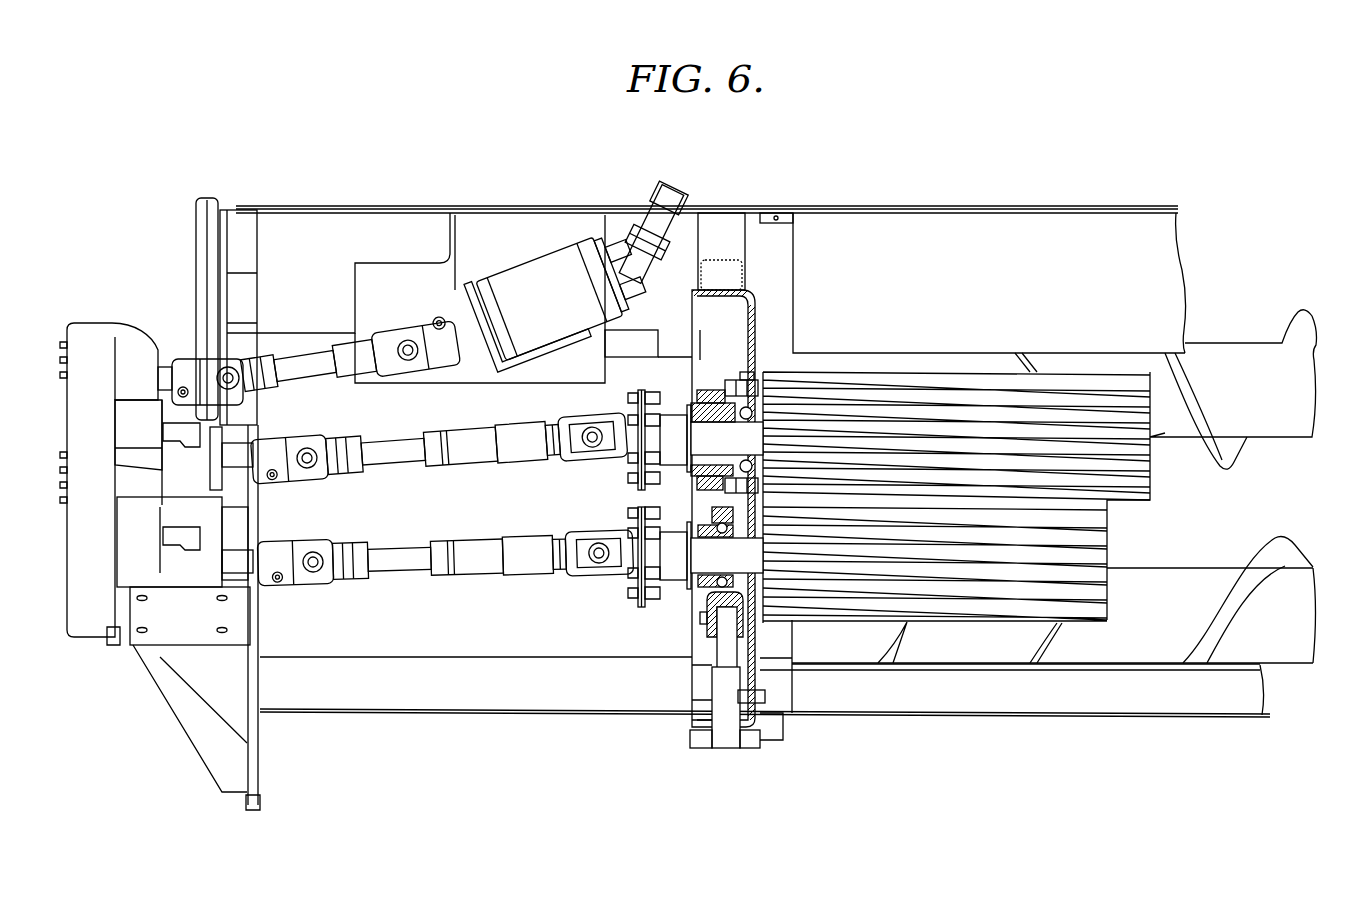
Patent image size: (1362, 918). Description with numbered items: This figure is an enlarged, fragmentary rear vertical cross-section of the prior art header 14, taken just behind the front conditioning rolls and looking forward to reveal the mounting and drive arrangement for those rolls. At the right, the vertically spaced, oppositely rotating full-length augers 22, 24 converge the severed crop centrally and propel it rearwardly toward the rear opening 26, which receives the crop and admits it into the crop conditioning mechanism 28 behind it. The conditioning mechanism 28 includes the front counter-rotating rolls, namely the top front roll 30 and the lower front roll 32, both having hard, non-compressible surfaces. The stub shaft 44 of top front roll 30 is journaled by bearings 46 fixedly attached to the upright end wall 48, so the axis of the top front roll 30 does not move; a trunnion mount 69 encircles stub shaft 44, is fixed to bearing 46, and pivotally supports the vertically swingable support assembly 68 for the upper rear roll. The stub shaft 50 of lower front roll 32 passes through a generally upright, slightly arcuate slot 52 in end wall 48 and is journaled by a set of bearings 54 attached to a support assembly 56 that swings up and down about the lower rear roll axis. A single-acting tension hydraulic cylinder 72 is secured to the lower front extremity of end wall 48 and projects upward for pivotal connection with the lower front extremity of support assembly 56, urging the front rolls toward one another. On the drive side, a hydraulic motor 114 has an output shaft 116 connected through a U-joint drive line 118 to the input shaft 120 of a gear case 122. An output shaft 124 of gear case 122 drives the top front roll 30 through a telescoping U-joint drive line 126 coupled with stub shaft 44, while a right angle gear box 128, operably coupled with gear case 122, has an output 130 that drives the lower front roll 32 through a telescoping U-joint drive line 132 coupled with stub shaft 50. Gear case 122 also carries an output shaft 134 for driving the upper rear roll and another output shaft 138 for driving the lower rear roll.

The header 14 is at (868, 180).
The auger 22 is at (1292, 324).
The auger 24 is at (1292, 553).
The rear opening 26 is at (1152, 355).
The crop conditioning mechanism 28 is at (953, 352).
The top front conditioning roll 30 is at (1162, 481).
The lower front conditioning roll 32 is at (1113, 596).
The stub shaft 44 is at (680, 425).
The bearings 46 is at (740, 385).
The end wall 48 is at (760, 312).
The stub shaft 50 is at (697, 565).
The slot 52 is at (795, 605).
The bearings 54 is at (712, 520).
The support assembly 56 is at (705, 630).
The support assembly 68 is at (707, 395).
The trunnion mount 69 is at (690, 470).
The tension hydraulic cylinder 72 is at (730, 745).
The hydraulic motor 114 is at (548, 262).
The output shaft 116 is at (462, 340).
The U-joint drive line 118 is at (298, 362).
The input shaft 120 is at (170, 362).
The gear case 122 is at (90, 338).
The output shaft 124 is at (172, 460).
The telescoping U-joint drive line 126 is at (404, 442).
The gear box 128 is at (222, 500).
The output 130 is at (296, 581).
The telescoping U-joint drive line 132 is at (402, 553).
The output shaft 134 is at (182, 428).
The output shaft 138 is at (170, 542).